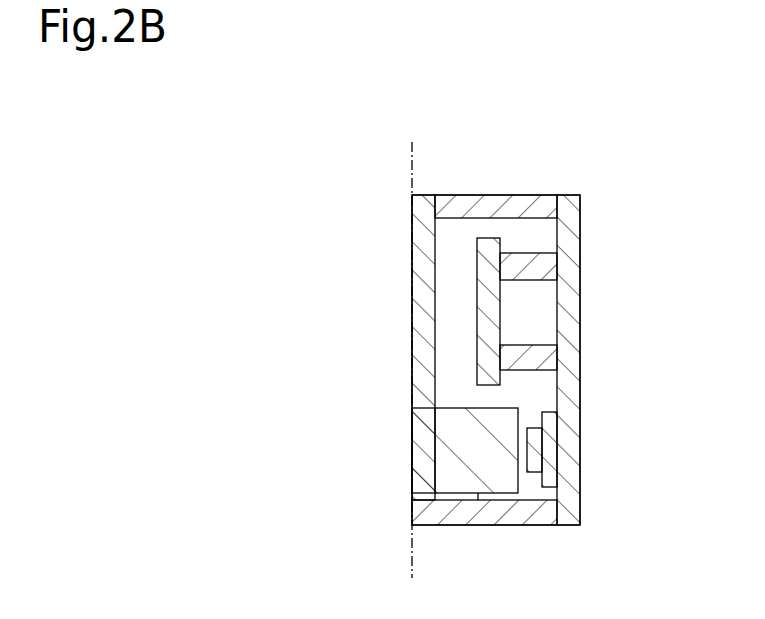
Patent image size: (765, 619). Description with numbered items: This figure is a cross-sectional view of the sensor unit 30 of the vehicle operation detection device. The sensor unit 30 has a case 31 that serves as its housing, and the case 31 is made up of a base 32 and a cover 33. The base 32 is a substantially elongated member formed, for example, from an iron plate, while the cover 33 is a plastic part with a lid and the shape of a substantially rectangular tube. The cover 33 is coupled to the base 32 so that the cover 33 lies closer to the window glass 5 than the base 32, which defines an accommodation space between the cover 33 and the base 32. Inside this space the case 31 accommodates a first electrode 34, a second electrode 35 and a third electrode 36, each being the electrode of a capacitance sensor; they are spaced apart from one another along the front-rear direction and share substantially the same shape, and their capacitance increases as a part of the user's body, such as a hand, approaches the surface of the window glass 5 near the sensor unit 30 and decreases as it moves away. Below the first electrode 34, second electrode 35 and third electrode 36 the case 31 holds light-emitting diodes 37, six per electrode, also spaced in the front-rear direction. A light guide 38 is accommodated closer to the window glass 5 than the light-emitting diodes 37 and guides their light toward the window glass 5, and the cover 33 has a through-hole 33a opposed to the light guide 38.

The window glass 5 is at (412, 163).
The sensor unit 30 is at (590, 176).
The case 31 is at (462, 195).
The base 32 is at (578, 336).
The cover 33 is at (411, 242).
The through-hole 33a is at (424, 490).
The first electrode 34 is at (482, 302).
The second electrode 35 is at (528, 266).
The third electrode 36 is at (528, 357).
The light-emitting diodes (LEDs) 37 is at (541, 463).
The light guide 38 is at (489, 502).